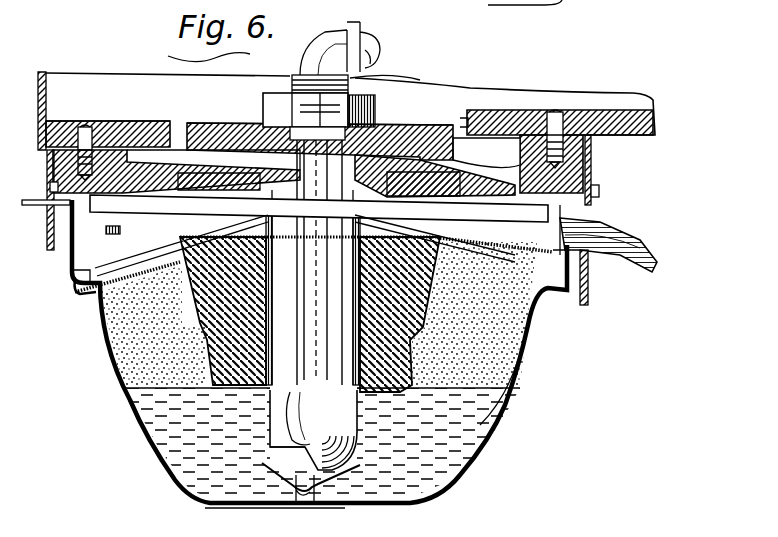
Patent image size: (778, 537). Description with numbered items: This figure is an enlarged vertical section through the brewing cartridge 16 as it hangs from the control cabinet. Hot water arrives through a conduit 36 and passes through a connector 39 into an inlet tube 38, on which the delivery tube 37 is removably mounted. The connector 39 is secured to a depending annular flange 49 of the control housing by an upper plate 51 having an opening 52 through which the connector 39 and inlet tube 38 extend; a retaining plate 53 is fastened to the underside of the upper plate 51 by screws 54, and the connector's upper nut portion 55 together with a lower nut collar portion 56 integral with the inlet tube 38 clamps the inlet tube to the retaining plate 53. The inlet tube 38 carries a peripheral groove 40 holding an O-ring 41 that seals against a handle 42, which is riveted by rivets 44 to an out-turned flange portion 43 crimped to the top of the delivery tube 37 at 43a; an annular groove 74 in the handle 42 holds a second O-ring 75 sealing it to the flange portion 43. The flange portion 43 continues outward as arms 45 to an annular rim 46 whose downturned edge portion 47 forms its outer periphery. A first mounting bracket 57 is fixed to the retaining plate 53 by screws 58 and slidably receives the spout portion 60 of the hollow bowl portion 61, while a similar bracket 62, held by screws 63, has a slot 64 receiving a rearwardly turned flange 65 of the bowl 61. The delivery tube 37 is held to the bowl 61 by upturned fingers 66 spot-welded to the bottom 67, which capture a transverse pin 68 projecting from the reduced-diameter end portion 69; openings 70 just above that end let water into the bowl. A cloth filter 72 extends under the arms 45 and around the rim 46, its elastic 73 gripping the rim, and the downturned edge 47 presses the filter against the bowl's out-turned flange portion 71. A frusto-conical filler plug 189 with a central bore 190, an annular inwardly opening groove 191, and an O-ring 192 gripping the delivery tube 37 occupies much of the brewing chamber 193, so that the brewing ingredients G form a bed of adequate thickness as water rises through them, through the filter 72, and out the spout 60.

The cartridge 16 is at (548, 350).
The conduit 36 is at (317, 40).
The delivery tube 37 is at (357, 418).
The inlet tube 38 is at (270, 400).
The connector 39 is at (366, 83).
The peripheral groove 40 is at (361, 111).
The O-ring 41 is at (313, 262).
The handle 42 is at (400, 175).
The out-turned flange portion 43 is at (422, 275).
The crimp 43a is at (385, 215).
The rivets 44 is at (362, 165).
The arms 45 is at (482, 250).
The annular rim 46 is at (565, 242).
The downturned edge portion 47 is at (590, 276).
The depending annular flange 49 is at (45, 106).
The upper plate 51 is at (503, 115).
The opening 52 is at (464, 120).
The retaining plate 53 is at (596, 118).
The screws 54 is at (560, 116).
The upper nut portion 55 is at (292, 100).
The lower nut collar portion 56 is at (298, 132).
The first mounting bracket 57 is at (592, 178).
The screws 58 is at (602, 192).
The spout portion 60 is at (640, 240).
The bowl portion 61 is at (520, 397).
The bracket 62 is at (50, 228).
The screws 63 is at (50, 168).
The slot 64 is at (48, 188).
The rearwardly turned flange 65 is at (32, 208).
The upturned fingers 66 is at (362, 477).
The bottom 67 is at (238, 506).
The transverse pin 68 is at (310, 488).
The reduced-diameter end portion 69 is at (357, 441).
The openings 70 is at (272, 443).
The out-turned flange portion 71 is at (553, 288).
The cloth filter 72 is at (100, 287).
The elastic 73 is at (115, 228).
The annular groove 74 is at (185, 272).
The O-ring 75 is at (192, 290).
The filler plug 189 is at (428, 345).
The central bore 190 is at (336, 380).
The annular inwardly opening groove 191 is at (344, 407).
The O-ring 192 is at (430, 375).
The brewing chamber 193 is at (185, 368).
The brewing ingredients G is at (112, 347).